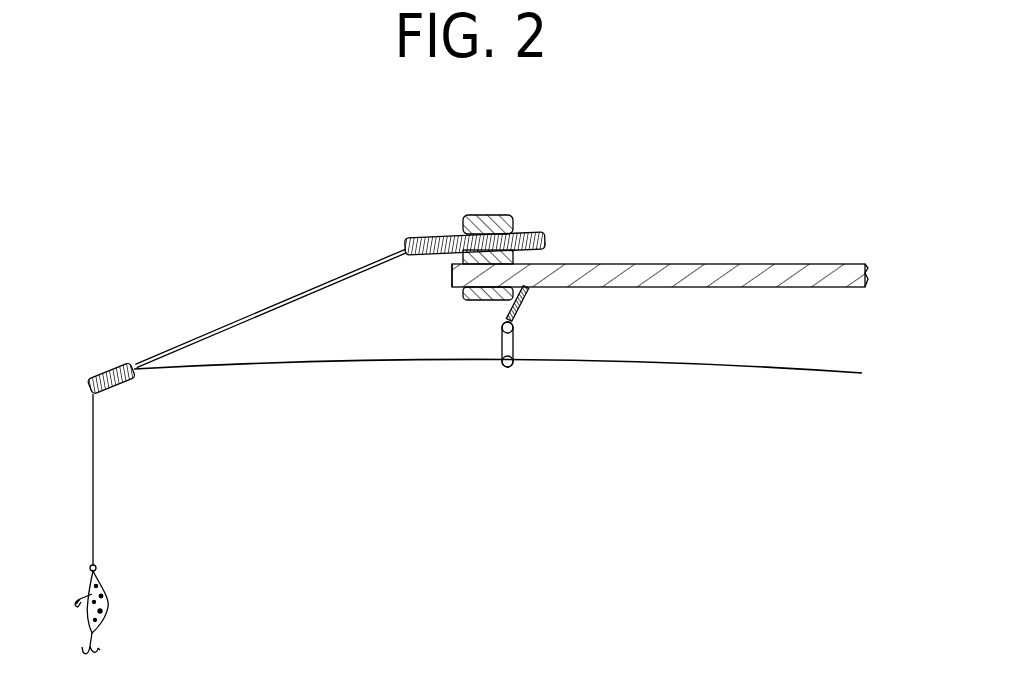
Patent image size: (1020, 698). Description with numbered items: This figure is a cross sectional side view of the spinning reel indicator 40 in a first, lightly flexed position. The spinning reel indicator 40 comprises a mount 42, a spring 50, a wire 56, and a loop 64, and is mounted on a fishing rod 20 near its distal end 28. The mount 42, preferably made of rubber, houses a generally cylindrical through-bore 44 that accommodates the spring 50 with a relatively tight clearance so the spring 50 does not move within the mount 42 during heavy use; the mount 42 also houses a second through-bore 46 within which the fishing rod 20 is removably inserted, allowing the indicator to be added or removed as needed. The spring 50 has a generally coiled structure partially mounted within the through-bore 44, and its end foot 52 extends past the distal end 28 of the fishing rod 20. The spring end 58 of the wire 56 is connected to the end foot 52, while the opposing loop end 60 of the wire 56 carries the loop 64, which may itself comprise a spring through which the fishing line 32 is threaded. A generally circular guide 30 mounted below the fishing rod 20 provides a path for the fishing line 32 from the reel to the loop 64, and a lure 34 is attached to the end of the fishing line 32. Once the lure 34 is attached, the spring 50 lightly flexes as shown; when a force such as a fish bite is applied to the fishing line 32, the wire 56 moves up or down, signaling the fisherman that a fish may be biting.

The fishing rod 20 is at (810, 263).
The distal end 28 is at (453, 270).
The guide 30 is at (508, 370).
The fishing line 32 is at (783, 372).
The lure 34 is at (108, 590).
The spinning reel indicator 40 is at (261, 156).
The mount 42 is at (495, 214).
The through-bore 44 is at (518, 233).
The second through-bore 46 is at (462, 294).
The spring 50 is at (545, 240).
The end foot 52 is at (410, 262).
The wire 56 is at (275, 303).
The spring end 58 is at (403, 250).
The loop end 60 is at (132, 362).
The loop 64 is at (125, 383).